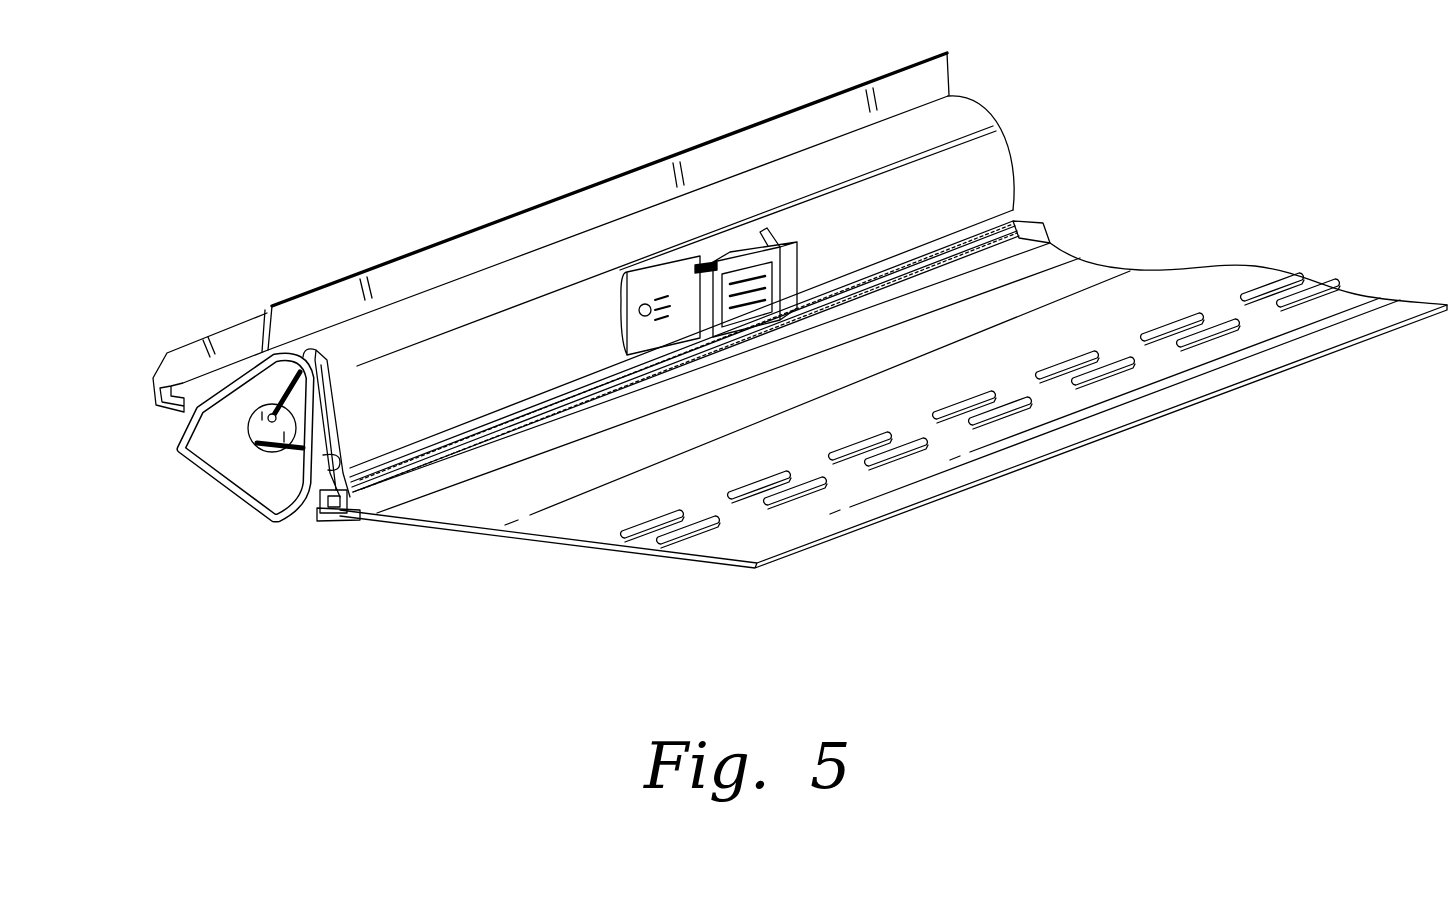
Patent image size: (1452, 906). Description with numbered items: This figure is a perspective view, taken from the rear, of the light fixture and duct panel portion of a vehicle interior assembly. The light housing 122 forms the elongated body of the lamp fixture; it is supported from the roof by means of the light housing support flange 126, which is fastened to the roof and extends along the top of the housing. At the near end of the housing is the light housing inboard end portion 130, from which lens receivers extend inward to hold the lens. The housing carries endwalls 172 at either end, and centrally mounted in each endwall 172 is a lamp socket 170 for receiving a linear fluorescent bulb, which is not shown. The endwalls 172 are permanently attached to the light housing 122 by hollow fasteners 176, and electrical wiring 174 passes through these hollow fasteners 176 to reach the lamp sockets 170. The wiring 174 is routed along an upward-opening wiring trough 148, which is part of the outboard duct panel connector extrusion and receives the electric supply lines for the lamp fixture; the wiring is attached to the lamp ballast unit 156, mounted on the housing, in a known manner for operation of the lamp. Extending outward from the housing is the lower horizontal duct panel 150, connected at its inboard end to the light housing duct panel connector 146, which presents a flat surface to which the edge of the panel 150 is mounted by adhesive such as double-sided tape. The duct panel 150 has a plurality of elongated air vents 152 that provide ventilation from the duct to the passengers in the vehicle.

The light housing 122 is at (722, 207).
The light housing support flange 126 is at (585, 203).
The light housing inboard end portion 130 is at (163, 357).
The light housing duct panel connector 146 is at (358, 522).
The wiring trough 148 is at (463, 430).
The lower horizontal duct panel 150 is at (532, 545).
The elongated air vents 152 is at (793, 482).
The lamp ballast unit 156 is at (770, 237).
The lamp sockets 170 is at (255, 470).
The endwalls 172 is at (260, 377).
The electrical wiring 174 is at (337, 408).
The hollow fasteners 176 is at (322, 349).